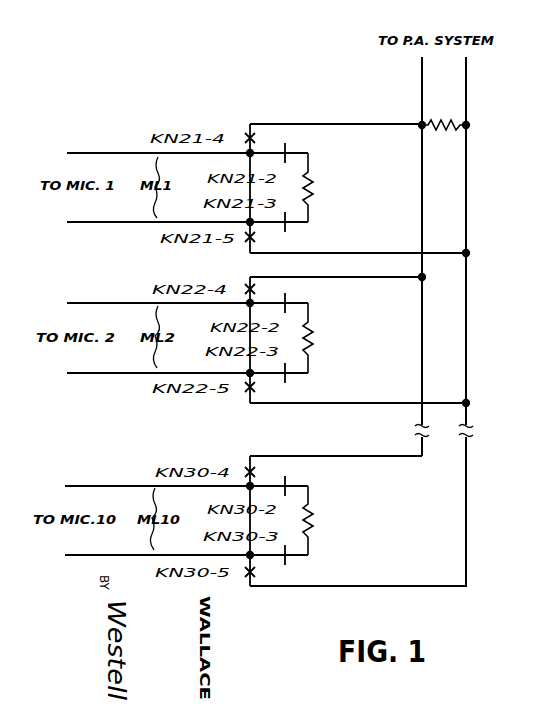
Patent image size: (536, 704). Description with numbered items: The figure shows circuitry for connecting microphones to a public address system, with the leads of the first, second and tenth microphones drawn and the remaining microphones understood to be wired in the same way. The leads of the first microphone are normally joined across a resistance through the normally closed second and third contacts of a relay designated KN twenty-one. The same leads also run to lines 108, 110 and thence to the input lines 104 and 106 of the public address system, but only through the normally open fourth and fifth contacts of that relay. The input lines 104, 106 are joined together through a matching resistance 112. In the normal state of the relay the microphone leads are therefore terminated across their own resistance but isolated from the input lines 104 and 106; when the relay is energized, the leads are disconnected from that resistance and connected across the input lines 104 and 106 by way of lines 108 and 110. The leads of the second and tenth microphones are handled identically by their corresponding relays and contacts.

The input line 104 is at (422, 101).
The input line 106 is at (466, 101).
The line 108 is at (287, 123).
The line 110 is at (337, 252).
The matching resistance 112 is at (441, 133).